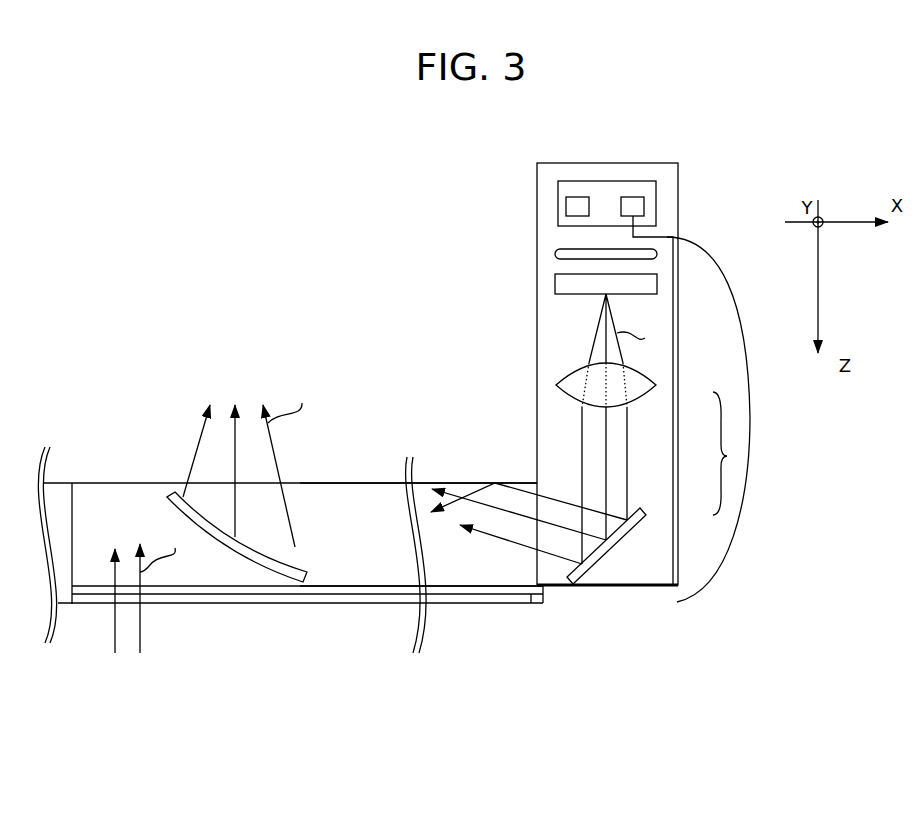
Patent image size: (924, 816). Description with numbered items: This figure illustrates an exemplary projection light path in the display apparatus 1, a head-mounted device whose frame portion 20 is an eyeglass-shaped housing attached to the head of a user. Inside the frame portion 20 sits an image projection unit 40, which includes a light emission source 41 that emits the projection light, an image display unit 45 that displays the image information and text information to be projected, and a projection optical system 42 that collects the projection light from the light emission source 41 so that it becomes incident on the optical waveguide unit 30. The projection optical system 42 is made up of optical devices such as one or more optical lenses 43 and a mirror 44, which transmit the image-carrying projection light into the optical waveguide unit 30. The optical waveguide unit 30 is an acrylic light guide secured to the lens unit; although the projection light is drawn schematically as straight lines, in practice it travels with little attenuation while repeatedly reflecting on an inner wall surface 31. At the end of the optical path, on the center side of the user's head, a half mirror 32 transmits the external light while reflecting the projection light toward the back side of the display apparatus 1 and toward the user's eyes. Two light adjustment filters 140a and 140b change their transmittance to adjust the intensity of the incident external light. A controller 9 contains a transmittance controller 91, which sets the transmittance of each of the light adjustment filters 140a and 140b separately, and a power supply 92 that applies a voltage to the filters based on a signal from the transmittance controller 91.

The display apparatus 1 is at (430, 186).
The controller 9 is at (572, 181).
The transmittance controller 91 is at (566, 207).
The power supply 92 is at (629, 197).
The frame portion 20 is at (678, 188).
The image projection unit 40 is at (750, 417).
The light emission source 41 is at (555, 254).
The image display unit 45 is at (555, 284).
The projection optical system 42 is at (653, 473).
The optical lens 43 is at (647, 397).
The mirror 44 is at (645, 523).
The optical waveguide unit 30 is at (355, 497).
The inner wall surface 31 is at (475, 484).
The half mirror 32 is at (227, 553).
The light adjustment filter 140a is at (377, 604).
The light adjustment filter 140b is at (545, 596).